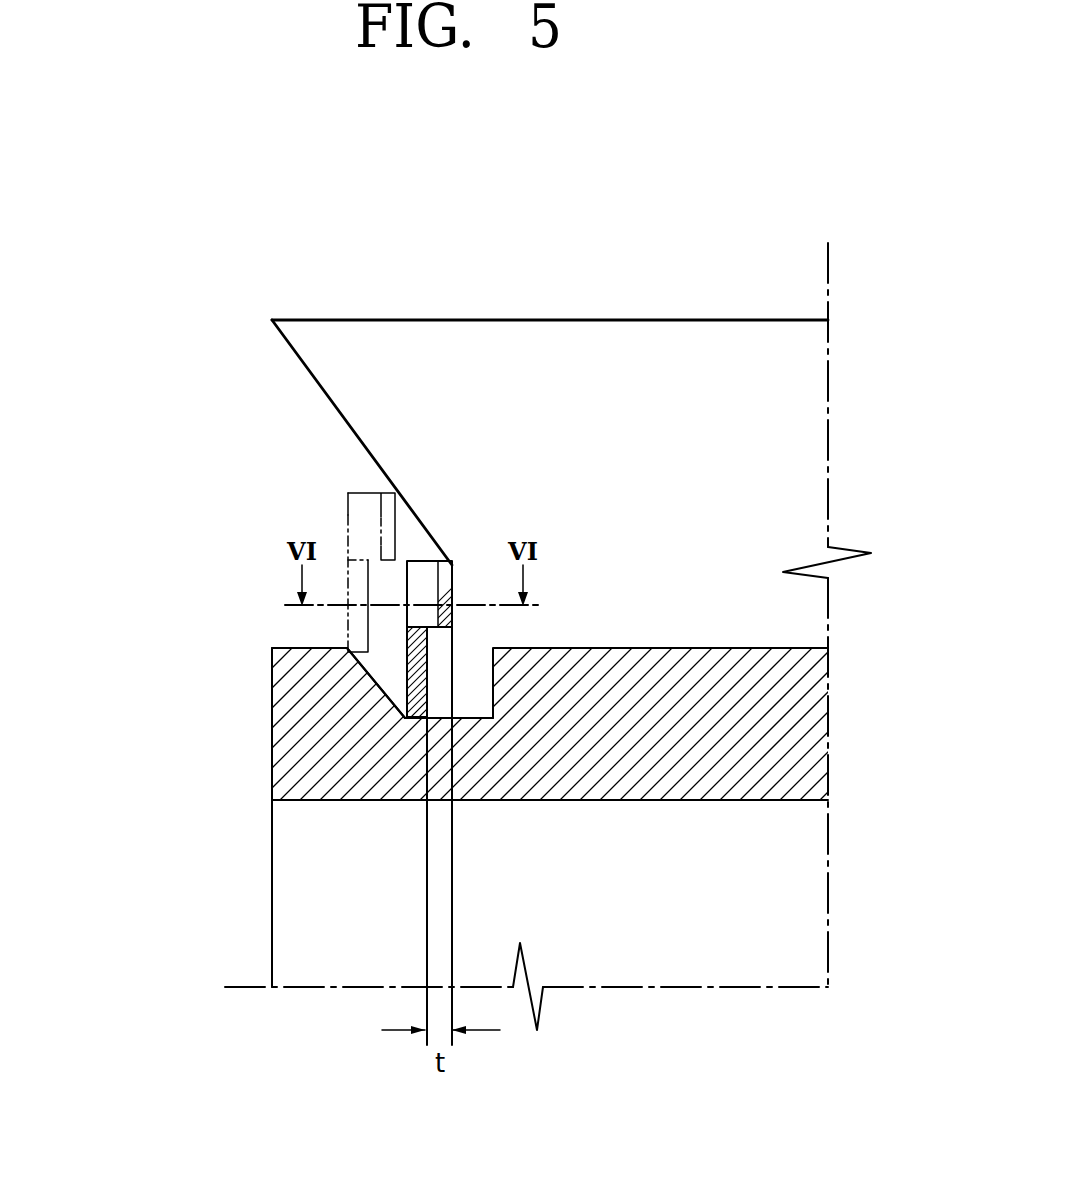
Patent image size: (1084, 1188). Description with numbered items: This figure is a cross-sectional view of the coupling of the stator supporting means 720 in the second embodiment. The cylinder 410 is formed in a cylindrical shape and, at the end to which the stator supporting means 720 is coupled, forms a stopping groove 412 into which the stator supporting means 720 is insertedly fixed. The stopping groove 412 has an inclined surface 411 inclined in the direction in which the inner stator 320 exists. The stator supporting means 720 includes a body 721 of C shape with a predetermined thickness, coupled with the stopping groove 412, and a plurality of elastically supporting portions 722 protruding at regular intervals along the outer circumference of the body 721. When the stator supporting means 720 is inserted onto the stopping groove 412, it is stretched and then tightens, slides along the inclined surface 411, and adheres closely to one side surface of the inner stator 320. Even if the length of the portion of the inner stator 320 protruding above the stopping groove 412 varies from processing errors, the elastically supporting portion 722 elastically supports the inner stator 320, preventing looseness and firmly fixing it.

The inner stator 320 is at (347, 365).
The cylinder 410 is at (800, 724).
The inclined surface 411 is at (365, 665).
The stopping groove 412 is at (487, 717).
The stator supporting means 720 is at (112, 433).
The body 721 is at (407, 662).
The elastically supporting portion 722 is at (458, 568).